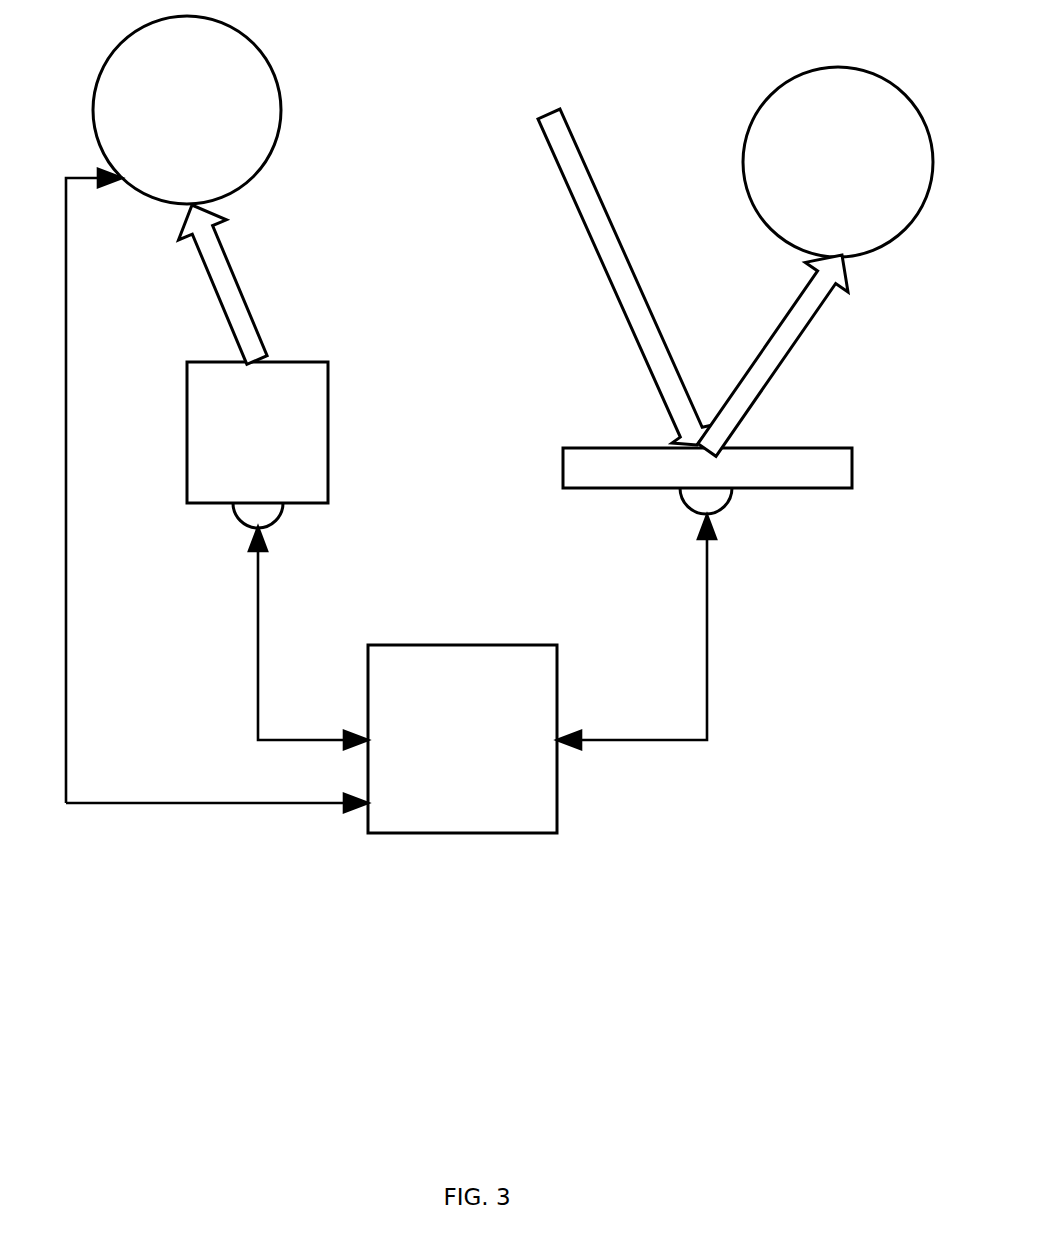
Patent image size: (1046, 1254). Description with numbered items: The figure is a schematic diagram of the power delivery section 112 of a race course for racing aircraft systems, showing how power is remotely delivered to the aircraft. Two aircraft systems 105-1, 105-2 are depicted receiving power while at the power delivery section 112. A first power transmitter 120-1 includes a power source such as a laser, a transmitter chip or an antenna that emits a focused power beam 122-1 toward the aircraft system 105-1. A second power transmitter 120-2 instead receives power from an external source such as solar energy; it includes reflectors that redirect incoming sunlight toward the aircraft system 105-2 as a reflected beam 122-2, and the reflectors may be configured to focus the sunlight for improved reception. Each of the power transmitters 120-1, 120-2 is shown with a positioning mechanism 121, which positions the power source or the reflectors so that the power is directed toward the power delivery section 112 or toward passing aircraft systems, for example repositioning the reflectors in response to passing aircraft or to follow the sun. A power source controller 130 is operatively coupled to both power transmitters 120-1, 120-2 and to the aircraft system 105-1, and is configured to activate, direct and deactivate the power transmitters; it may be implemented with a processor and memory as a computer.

The aircraft system 105-1 is at (157, 125).
The aircraft system 105-2 is at (809, 173).
The first power transmitter 120-1 is at (228, 445).
The second power transmitter 120-2 is at (677, 481).
The positioning mechanism 121 is at (276, 519).
The power beam 122-1 is at (259, 284).
The reflected beam 122-2 is at (784, 355).
The power source controller 130 is at (442, 723).
The power delivery section 112 is at (228, 945).